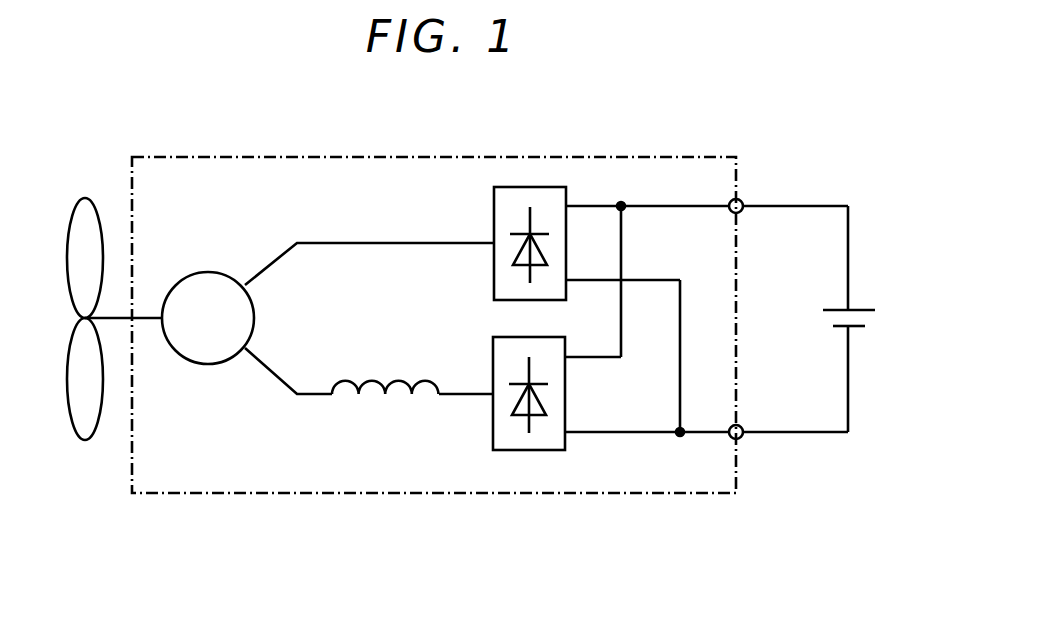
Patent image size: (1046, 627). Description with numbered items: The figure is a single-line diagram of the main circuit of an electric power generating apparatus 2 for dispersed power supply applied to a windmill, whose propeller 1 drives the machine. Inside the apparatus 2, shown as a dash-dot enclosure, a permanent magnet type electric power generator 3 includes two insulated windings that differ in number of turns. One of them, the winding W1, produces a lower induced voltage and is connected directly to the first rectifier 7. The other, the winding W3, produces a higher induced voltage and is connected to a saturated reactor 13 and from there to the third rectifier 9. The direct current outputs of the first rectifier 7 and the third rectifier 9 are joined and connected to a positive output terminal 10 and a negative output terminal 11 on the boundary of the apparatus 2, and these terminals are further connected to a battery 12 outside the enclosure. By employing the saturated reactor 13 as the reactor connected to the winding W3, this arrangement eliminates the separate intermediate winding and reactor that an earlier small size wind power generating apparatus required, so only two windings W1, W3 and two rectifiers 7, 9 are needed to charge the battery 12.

The wind turbine propeller 1 is at (85, 198).
The electric power generating apparatus 2 is at (609, 493).
The permanent magnet type electric power generator 3 is at (208, 272).
The first rectifier 7 is at (494, 212).
The third rectifier 9 is at (493, 418).
The positive output terminal 10 is at (743, 199).
The negative output terminal 11 is at (743, 425).
The battery 12 is at (866, 306).
The saturated reactor 13 is at (395, 383).
The winding W1 is at (369, 270).
The winding W3 is at (369, 369).